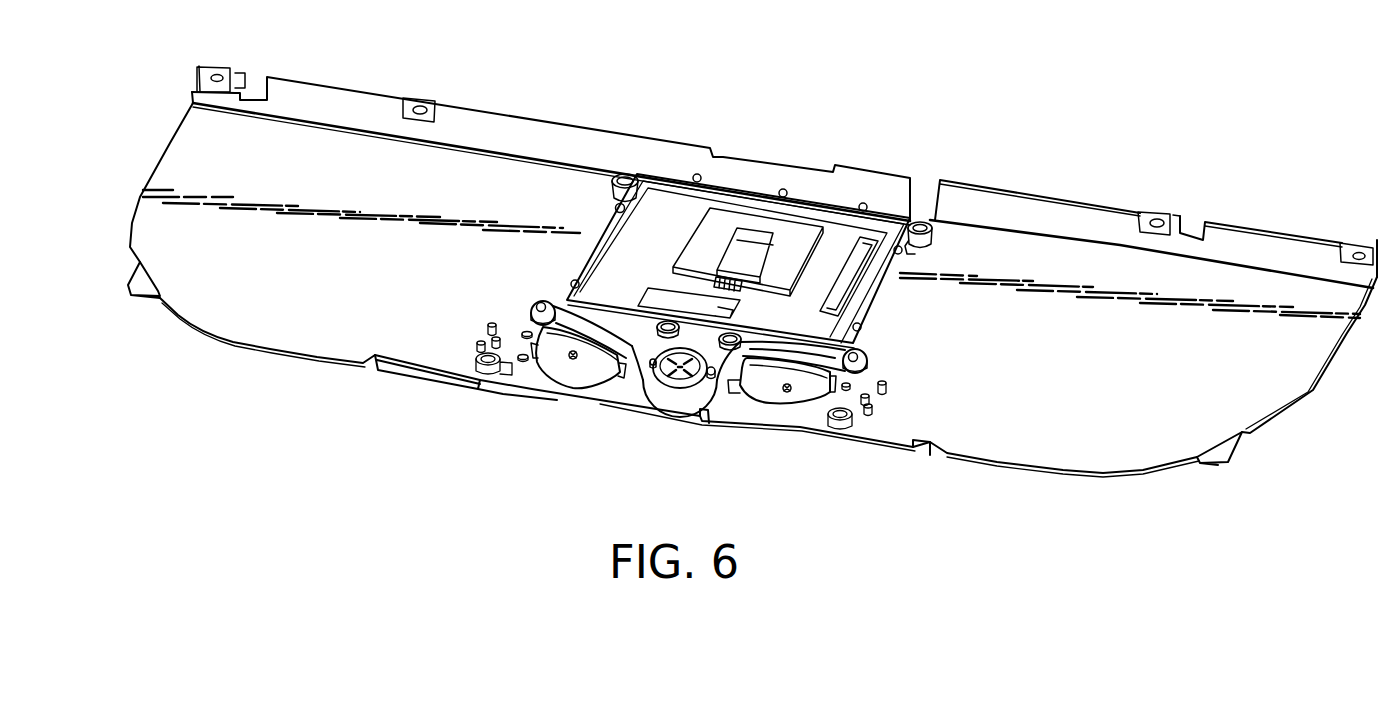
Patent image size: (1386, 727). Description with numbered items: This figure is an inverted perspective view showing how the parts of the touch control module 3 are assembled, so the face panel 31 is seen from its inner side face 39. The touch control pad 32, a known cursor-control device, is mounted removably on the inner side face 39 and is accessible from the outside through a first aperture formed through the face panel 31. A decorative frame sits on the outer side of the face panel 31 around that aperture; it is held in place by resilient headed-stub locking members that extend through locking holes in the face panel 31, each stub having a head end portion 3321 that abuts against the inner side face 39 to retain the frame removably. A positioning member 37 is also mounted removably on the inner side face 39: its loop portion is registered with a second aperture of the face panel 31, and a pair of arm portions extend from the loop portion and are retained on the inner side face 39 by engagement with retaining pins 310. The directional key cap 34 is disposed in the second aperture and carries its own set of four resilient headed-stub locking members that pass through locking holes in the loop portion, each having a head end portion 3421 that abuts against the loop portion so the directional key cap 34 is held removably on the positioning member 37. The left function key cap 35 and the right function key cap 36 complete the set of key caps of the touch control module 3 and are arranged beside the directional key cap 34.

The touch control module 3 is at (965, 140).
The face panel 31 is at (1330, 360).
The retaining pins 310 is at (540, 300).
The touch control pad 32 is at (670, 218).
The head end portion 3321 is at (612, 203).
The directional key cap 34 is at (680, 392).
The head end portion 3421 is at (711, 375).
The left function key cap 35 is at (763, 400).
The right function key cap 36 is at (583, 370).
The positioning member 37 is at (643, 386).
The inner side face 39 is at (1247, 393).